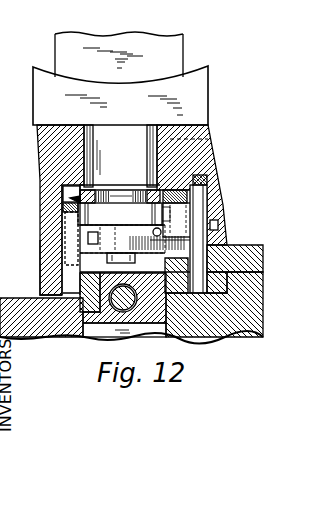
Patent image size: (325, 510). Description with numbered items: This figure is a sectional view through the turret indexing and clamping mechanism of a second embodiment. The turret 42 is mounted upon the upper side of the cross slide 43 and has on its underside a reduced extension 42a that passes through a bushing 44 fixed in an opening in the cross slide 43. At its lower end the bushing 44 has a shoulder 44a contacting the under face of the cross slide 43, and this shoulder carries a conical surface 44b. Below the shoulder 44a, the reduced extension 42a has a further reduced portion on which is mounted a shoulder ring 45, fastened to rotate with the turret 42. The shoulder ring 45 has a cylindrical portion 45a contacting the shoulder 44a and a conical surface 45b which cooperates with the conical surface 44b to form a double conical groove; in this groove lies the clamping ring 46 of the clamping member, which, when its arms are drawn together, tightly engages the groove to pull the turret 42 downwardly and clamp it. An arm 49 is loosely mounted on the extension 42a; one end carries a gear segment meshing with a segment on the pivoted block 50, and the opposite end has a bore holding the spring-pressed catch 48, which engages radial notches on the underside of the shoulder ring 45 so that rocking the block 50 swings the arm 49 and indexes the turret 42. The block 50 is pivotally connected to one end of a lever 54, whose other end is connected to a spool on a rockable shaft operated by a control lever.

The turret 42 is at (200, 96).
The reduced extension 42a is at (208, 139).
The cross slide 43 is at (40, 147).
The bushing 44 is at (86, 138).
The shoulder 44a is at (187, 158).
The conical surface 44b is at (62, 199).
The shoulder ring 45 is at (124, 214).
The cylindrical portion 45a is at (116, 198).
The conical surface 45b is at (128, 206).
The clamping ring 46 is at (62, 212).
The spring-pressed catch 48 is at (63, 244).
The arm 49 is at (40, 253).
The pivoted arm or block 50 is at (215, 212).
The lever 54 is at (190, 180).